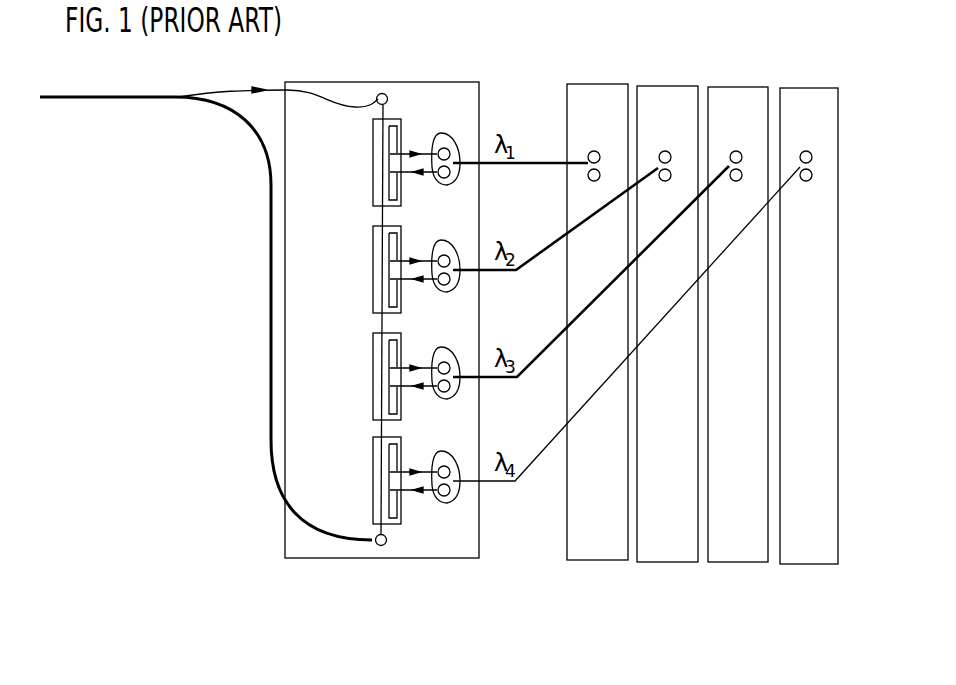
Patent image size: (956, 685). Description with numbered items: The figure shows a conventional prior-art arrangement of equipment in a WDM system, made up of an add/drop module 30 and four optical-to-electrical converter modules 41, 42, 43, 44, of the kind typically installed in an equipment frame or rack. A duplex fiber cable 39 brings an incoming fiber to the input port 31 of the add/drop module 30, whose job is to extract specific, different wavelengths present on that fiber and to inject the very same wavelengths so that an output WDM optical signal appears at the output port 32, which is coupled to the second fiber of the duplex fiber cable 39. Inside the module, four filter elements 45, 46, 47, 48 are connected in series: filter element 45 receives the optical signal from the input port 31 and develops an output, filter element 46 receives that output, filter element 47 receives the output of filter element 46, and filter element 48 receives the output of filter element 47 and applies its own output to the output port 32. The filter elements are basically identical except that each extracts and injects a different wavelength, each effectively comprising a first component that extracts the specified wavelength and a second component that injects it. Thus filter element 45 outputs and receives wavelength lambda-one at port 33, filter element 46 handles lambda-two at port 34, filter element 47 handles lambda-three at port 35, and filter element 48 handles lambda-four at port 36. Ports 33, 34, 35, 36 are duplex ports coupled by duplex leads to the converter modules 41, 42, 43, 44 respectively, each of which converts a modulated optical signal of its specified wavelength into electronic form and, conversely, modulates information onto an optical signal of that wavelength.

The duplex fiber cable 39 is at (78, 96).
The add/drop module 30 is at (435, 82).
The input port 31 is at (388, 100).
The output port 32 is at (387, 541).
The port 33 is at (447, 185).
The port 34 is at (447, 292).
The port 35 is at (447, 399).
The port 36 is at (447, 503).
The optical-to-electrical converter module 41 is at (582, 84).
The optical-to-electrical converter module 42 is at (652, 86).
The optical-to-electrical converter module 43 is at (723, 87).
The optical-to-electrical converter module 44 is at (795, 88).
The filter element 45 is at (373, 163).
The filter element 46 is at (373, 270).
The filter element 47 is at (373, 377).
The filter element 48 is at (373, 481).